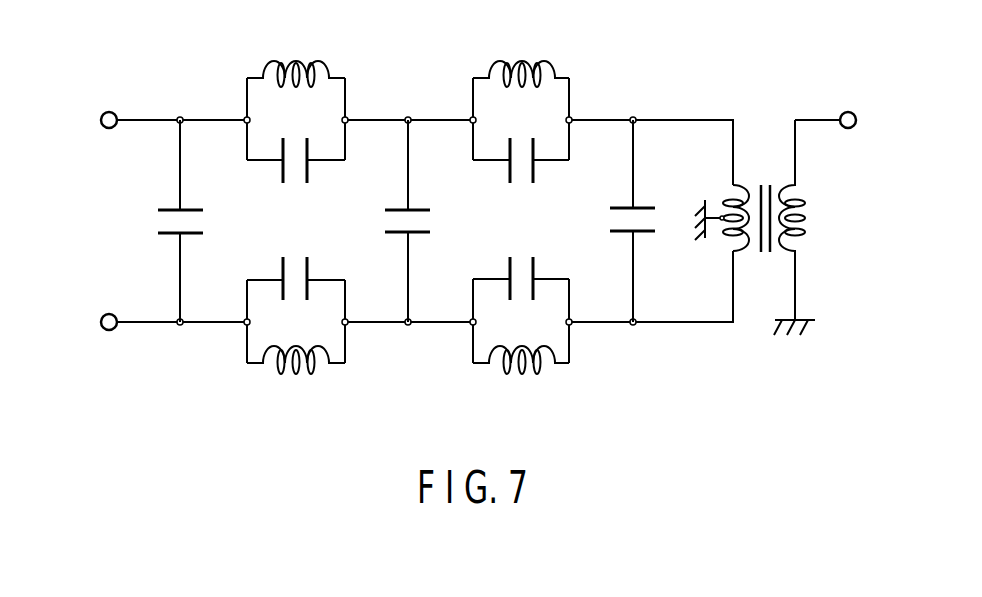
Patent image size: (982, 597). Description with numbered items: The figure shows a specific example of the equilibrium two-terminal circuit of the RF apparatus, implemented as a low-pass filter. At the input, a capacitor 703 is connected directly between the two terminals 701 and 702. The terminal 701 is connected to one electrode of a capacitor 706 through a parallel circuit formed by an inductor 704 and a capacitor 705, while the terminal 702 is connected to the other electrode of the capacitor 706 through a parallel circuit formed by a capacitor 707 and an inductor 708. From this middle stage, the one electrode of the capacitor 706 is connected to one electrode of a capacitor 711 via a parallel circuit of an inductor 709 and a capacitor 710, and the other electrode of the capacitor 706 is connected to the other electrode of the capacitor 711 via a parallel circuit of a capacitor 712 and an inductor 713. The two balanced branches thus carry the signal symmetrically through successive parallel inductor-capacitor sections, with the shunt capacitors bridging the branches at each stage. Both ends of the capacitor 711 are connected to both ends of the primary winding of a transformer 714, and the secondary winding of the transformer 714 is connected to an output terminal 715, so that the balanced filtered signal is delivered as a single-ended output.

The terminal 701 is at (116, 113).
The terminal 702 is at (116, 315).
The capacitor 703 is at (157, 221).
The inductor 704 is at (308, 64).
The capacitor 705 is at (276, 168).
The capacitor 706 is at (383, 221).
The capacitor 707 is at (313, 268).
The inductor 708 is at (272, 369).
The inductor 709 is at (534, 64).
The capacitor 710 is at (503, 168).
The capacitor 711 is at (608, 221).
The capacitor 712 is at (539, 268).
The inductor 713 is at (498, 369).
The transformer 714 is at (768, 174).
The output terminal 715 is at (843, 112).